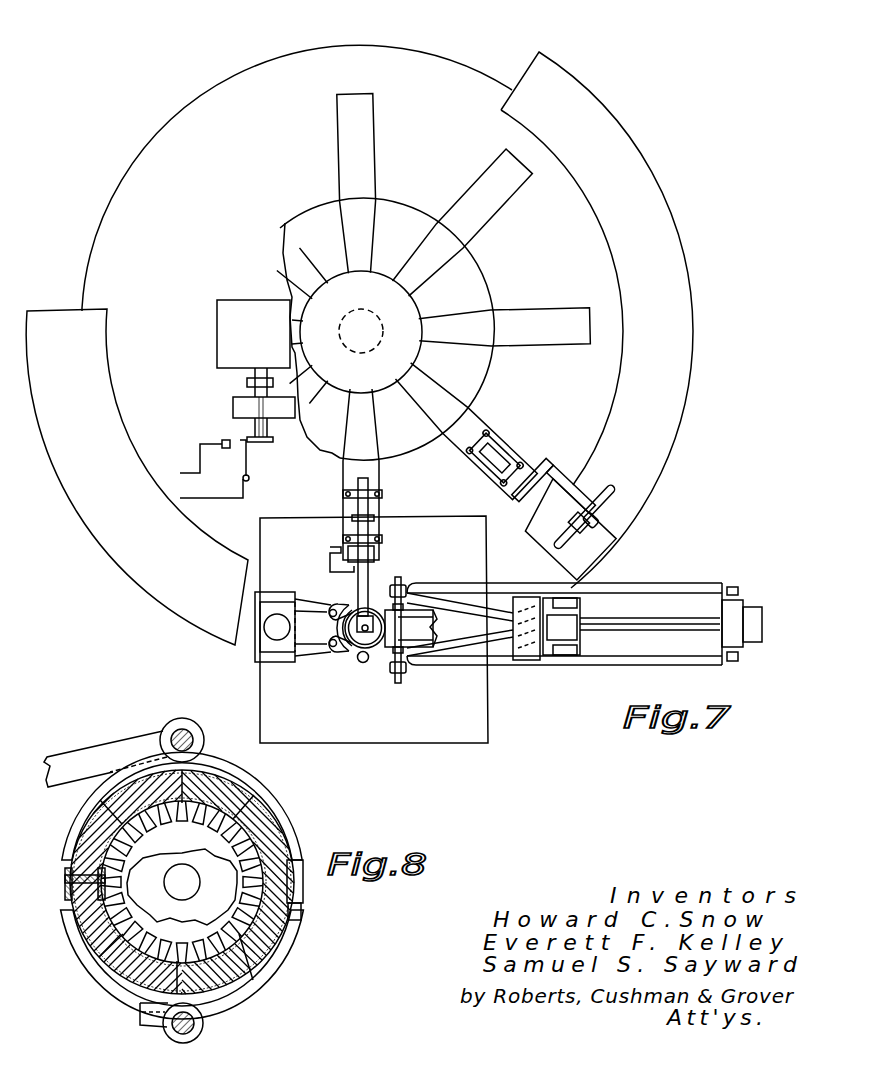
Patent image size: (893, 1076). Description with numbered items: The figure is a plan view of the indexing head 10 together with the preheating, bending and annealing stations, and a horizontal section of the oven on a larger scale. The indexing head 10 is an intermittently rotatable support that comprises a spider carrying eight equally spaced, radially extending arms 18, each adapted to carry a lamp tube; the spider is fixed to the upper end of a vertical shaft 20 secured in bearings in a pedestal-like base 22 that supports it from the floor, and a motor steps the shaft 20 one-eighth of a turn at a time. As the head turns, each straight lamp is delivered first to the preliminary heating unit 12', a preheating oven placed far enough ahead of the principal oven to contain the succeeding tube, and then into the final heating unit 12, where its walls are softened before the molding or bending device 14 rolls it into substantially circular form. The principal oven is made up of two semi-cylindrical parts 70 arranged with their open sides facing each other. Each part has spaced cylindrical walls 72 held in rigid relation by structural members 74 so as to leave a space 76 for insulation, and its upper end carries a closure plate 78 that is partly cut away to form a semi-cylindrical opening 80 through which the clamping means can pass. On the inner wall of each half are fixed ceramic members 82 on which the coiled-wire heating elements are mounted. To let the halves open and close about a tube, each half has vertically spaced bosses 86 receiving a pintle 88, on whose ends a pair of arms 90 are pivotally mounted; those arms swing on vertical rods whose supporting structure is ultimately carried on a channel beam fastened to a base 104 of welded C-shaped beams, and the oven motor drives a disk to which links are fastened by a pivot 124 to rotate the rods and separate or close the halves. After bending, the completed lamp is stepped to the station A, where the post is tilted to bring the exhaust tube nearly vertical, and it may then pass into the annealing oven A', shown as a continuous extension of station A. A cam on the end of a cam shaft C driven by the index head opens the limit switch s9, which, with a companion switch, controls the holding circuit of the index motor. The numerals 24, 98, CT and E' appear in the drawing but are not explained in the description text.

In FIG. 7, the indexing head 10 is at (456, 56).
In FIG. 7, the final heating unit 12 is at (337, 656).
In FIG. 8, the final heating unit 12 is at (320, 900).
In FIG. 7, the preliminary heating unit 12' is at (135, 477).
In FIG. 7, the molding or bending device 14 is at (414, 682).
In FIG. 7, the arms 18 is at (338, 148).
In FIG. 7, the vertical shaft 20 is at (361, 332).
In FIG. 7, the pedestal-like base 22 is at (243, 86).
In FIG. 7, the blade adjusting mechanism 24 is at (560, 466).
In FIG. 8, the semi-cylindrical parts 70 is at (252, 782).
In FIG. 8, the cylindrical walls 72 is at (113, 923).
In FIG. 8, the structural members 74 is at (103, 950).
In FIG. 8, the space 76 is at (247, 993).
In FIG. 8, the closure plate 78 is at (66, 897).
In FIG. 8, the semi-cylindrical opening 80 is at (220, 853).
In FIG. 8, the ceramic members 82 is at (167, 818).
In FIG. 8, the bosses 86 is at (162, 731).
In FIG. 8, the pintle 88 is at (182, 735).
In FIG. 8, the arms 90 is at (53, 768).
In FIG. 7, the bearing block 98 is at (273, 603).
In FIG. 7, the base 104 is at (392, 730).
In FIG. 7, the pivot 124 is at (584, 624).
In FIG. 7, the station A is at (636, 459).
In FIG. 7, the annealing oven A' is at (597, 191).
In FIG. 7, the cam shaft C is at (260, 427).
In FIG. 7, the control handle CT is at (587, 537).
In FIG. 7, the end member E' is at (546, 661).
In FIG. 7, the limit switch s9 is at (248, 458).